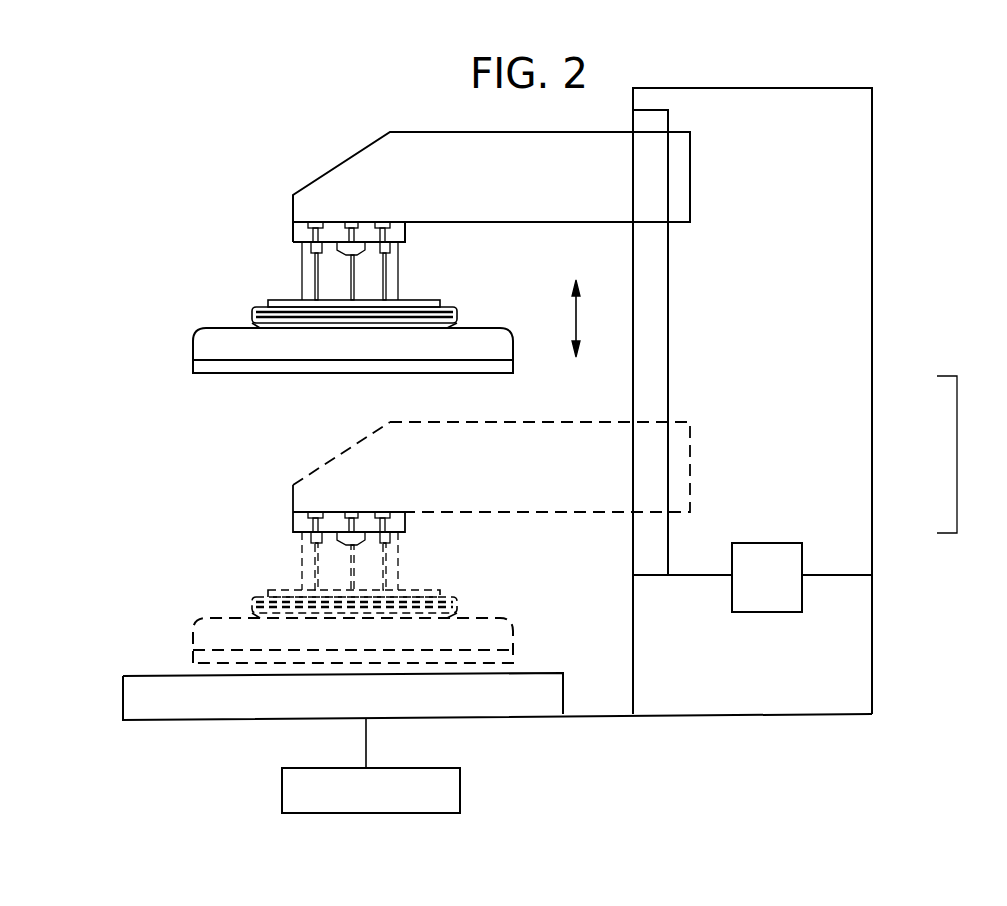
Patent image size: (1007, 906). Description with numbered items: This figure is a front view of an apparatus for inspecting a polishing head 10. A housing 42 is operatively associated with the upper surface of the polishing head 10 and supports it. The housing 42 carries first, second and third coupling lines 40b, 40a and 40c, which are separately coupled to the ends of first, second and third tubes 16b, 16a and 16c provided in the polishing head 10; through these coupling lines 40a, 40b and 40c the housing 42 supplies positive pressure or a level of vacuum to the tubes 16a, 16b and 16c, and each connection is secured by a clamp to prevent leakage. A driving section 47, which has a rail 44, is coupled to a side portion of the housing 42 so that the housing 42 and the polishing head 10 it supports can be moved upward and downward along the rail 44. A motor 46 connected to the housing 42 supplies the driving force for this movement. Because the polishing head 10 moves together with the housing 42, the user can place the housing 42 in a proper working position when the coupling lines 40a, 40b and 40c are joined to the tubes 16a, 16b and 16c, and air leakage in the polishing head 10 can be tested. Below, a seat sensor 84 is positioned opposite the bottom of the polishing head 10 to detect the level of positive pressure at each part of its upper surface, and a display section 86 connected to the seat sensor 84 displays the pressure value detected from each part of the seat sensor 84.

The polishing head 10 is at (193, 350).
The second tube 16a is at (355, 268).
The first tube 16b is at (387, 288).
The third tube 16c is at (305, 274).
The second coupling line 40a is at (352, 222).
The first coupling line 40b is at (381, 222).
The third coupling line 40c is at (310, 221).
The housing 42 is at (390, 132).
The rail 44 is at (668, 387).
The motor 46 is at (802, 558).
The driving section 47 is at (961, 454).
The seat sensor 84 is at (168, 720).
The display section 86 is at (460, 790).